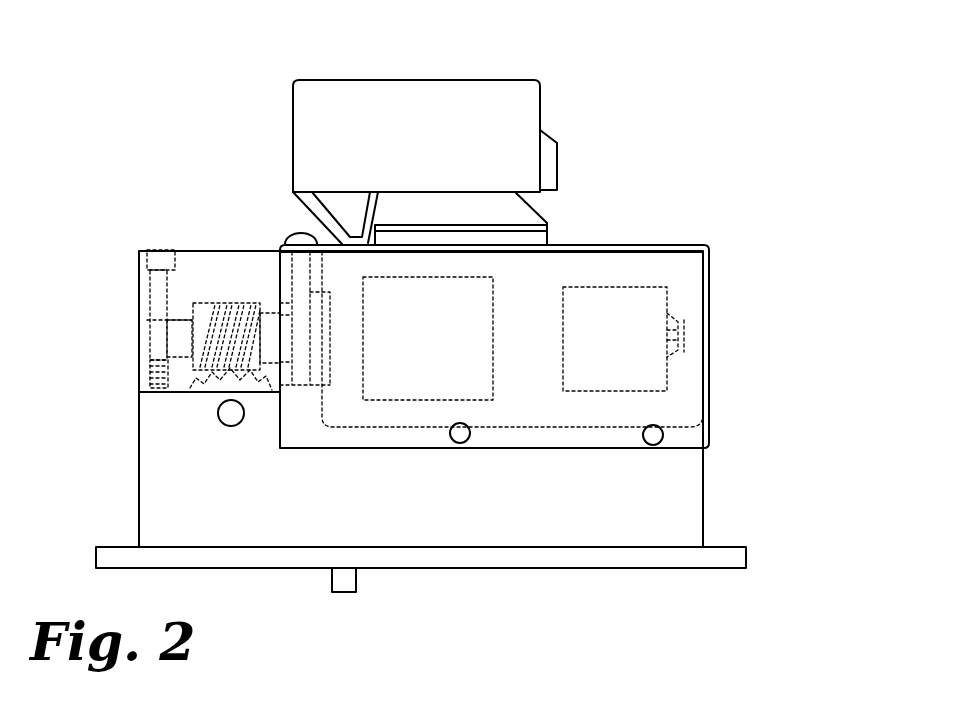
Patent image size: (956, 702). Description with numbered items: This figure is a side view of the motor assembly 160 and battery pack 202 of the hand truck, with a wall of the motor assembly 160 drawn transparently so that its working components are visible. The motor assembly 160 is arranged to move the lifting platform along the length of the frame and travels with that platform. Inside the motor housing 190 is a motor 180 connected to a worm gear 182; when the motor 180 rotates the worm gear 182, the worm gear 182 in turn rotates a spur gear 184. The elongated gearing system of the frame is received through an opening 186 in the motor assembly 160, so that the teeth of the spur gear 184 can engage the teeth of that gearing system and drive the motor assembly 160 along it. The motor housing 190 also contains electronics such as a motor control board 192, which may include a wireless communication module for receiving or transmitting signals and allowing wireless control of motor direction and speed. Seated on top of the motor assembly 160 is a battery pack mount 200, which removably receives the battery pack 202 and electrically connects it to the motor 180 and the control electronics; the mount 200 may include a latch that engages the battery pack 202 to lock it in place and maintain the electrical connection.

The motor assembly 160 is at (688, 103).
The motor 180 is at (623, 362).
The worm gear 182 is at (212, 323).
The spur gear 184 is at (218, 383).
The opening 186 is at (100, 512).
The motor housing 190 is at (647, 262).
The motor control board 192 is at (542, 222).
The battery pack mount 200 is at (572, 225).
The battery pack 202 is at (345, 67).